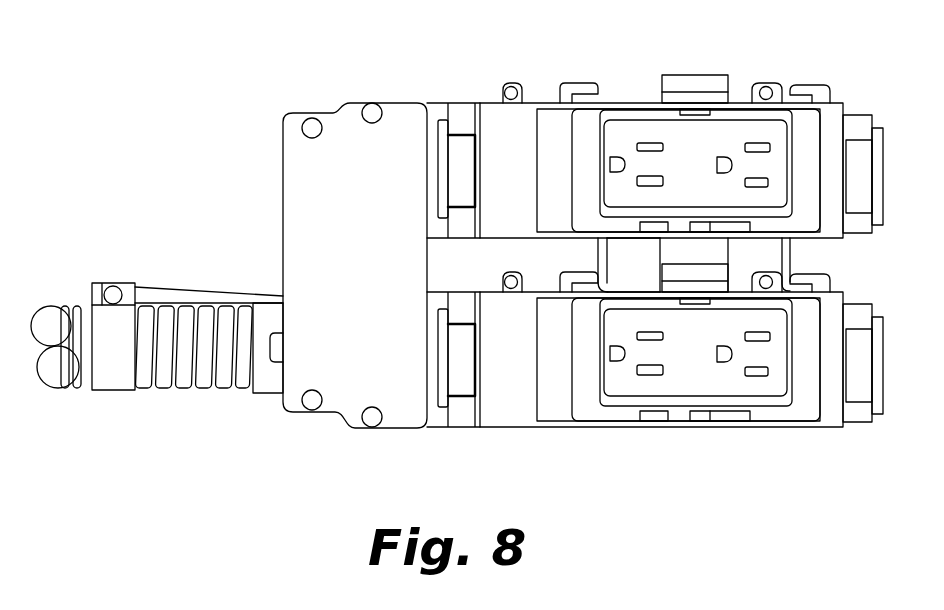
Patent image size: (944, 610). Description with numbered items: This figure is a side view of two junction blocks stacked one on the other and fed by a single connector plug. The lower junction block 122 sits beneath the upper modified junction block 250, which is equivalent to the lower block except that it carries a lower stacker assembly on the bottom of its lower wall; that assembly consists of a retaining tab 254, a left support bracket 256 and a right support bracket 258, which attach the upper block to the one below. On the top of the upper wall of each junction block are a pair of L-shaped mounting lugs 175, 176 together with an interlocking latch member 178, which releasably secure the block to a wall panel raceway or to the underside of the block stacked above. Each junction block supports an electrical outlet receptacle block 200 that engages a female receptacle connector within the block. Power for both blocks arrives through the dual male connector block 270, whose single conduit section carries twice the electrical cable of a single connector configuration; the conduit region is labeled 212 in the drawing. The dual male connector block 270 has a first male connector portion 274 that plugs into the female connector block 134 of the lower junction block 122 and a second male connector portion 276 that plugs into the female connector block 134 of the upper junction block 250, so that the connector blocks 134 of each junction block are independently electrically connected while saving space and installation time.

The dual male connector block 270 is at (195, 203).
The second male connector portion 276 is at (432, 90).
The first male connector portion 274 is at (425, 433).
The female connector block 134 is at (458, 150).
The junction block 122 is at (502, 422).
The modified junction block 250 is at (508, 125).
The electrical outlet receptacle block 200 is at (678, 140).
The L-shaped mounting lug 175 is at (583, 82).
The interlocking latch member 178 is at (705, 77).
The L-shaped mounting lug 176 is at (810, 85).
The left support bracket 256 is at (600, 260).
The retaining tab 254 is at (662, 253).
The right support bracket 258 is at (790, 260).
The flexible conduit 212 is at (193, 390).